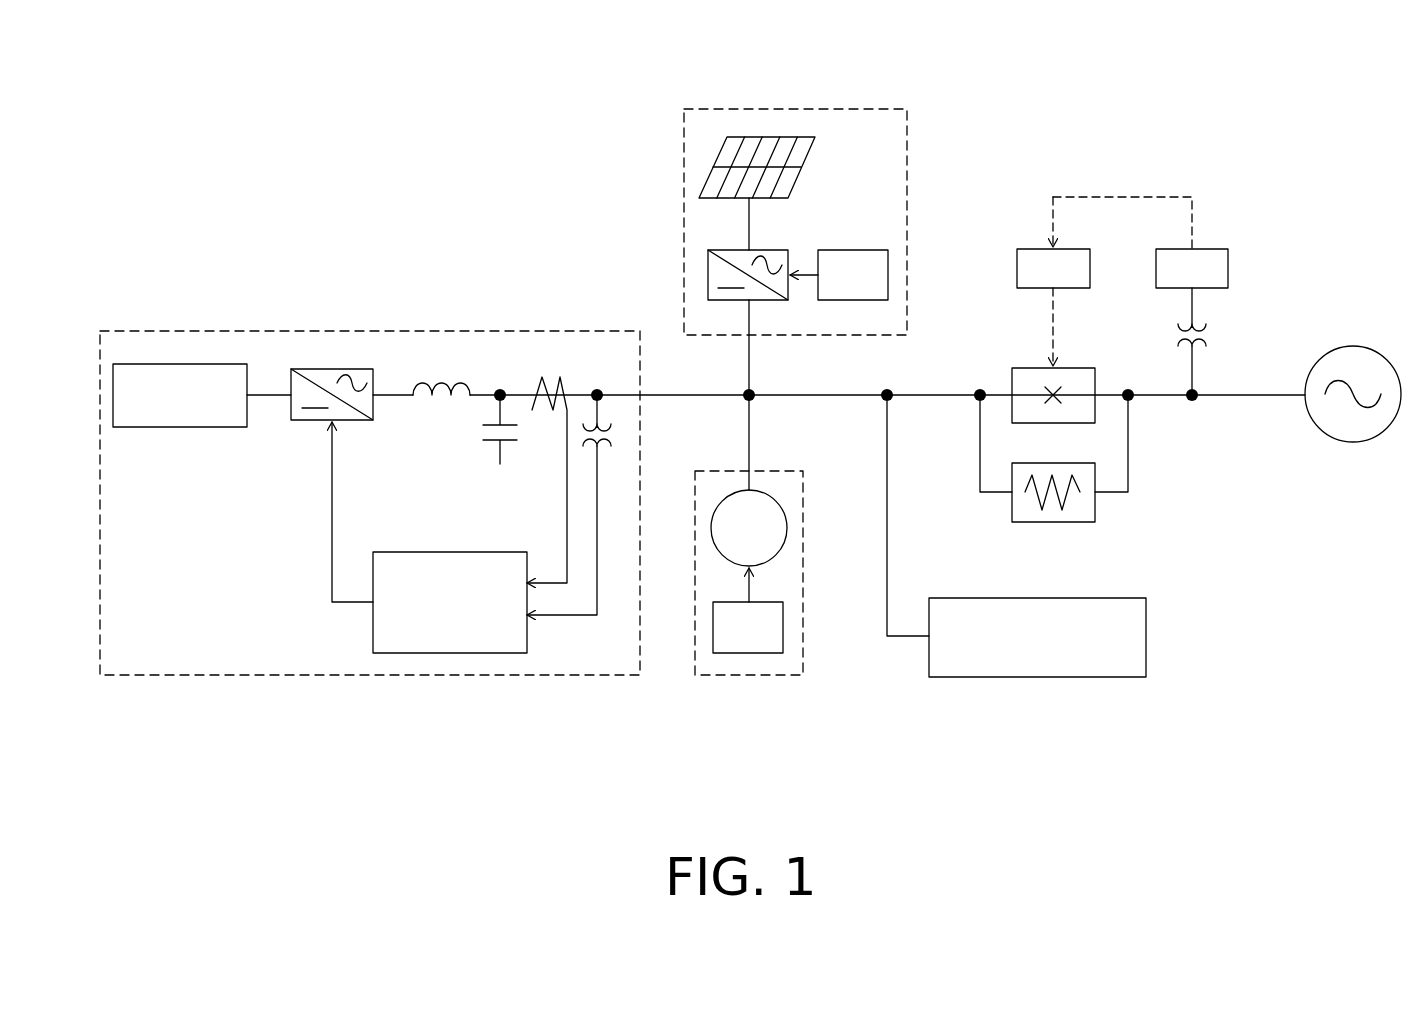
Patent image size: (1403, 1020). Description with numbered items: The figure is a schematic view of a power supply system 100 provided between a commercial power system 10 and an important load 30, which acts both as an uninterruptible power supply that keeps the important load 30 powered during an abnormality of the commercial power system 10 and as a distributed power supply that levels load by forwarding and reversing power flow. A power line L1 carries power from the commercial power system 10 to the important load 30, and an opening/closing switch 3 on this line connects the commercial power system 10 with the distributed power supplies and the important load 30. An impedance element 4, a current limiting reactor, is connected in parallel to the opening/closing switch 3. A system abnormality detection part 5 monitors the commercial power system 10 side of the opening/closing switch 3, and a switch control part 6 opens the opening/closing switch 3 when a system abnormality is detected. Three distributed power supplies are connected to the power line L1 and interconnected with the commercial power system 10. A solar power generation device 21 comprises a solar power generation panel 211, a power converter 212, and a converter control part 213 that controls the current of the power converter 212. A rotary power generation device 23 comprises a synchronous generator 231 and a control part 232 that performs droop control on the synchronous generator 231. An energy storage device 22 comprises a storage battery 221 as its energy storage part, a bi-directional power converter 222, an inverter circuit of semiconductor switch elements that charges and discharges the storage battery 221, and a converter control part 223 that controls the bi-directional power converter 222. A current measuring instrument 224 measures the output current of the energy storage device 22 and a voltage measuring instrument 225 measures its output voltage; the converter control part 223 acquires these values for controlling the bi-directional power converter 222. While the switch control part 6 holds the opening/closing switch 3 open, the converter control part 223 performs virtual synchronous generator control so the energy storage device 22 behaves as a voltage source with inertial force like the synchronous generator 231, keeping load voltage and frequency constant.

The power supply system 100 is at (486, 142).
The commercial power system 10 is at (1355, 346).
The power line L1 is at (942, 397).
The opening/closing switch 3 is at (1022, 366).
The impedance element 4 is at (1097, 510).
The system abnormality detection part 5 is at (1215, 247).
The switch control part 6 is at (1032, 248).
The solar power generation device 21 is at (802, 108).
The solar power generation panel 211 is at (715, 150).
The power converter 212 is at (706, 275).
The converter control part 213 is at (851, 250).
The energy storage device 22 is at (370, 330).
The storage battery 221 is at (179, 428).
The bi-directional power converter 222 is at (361, 421).
The converter control part 223 is at (373, 625).
The current measuring instrument 224 is at (553, 376).
The voltage measuring instrument 225 is at (614, 432).
The rotary power generation device 23 is at (750, 677).
The synchronous generator 231 is at (789, 528).
The control part 232 is at (784, 632).
The important load 30 is at (1038, 679).